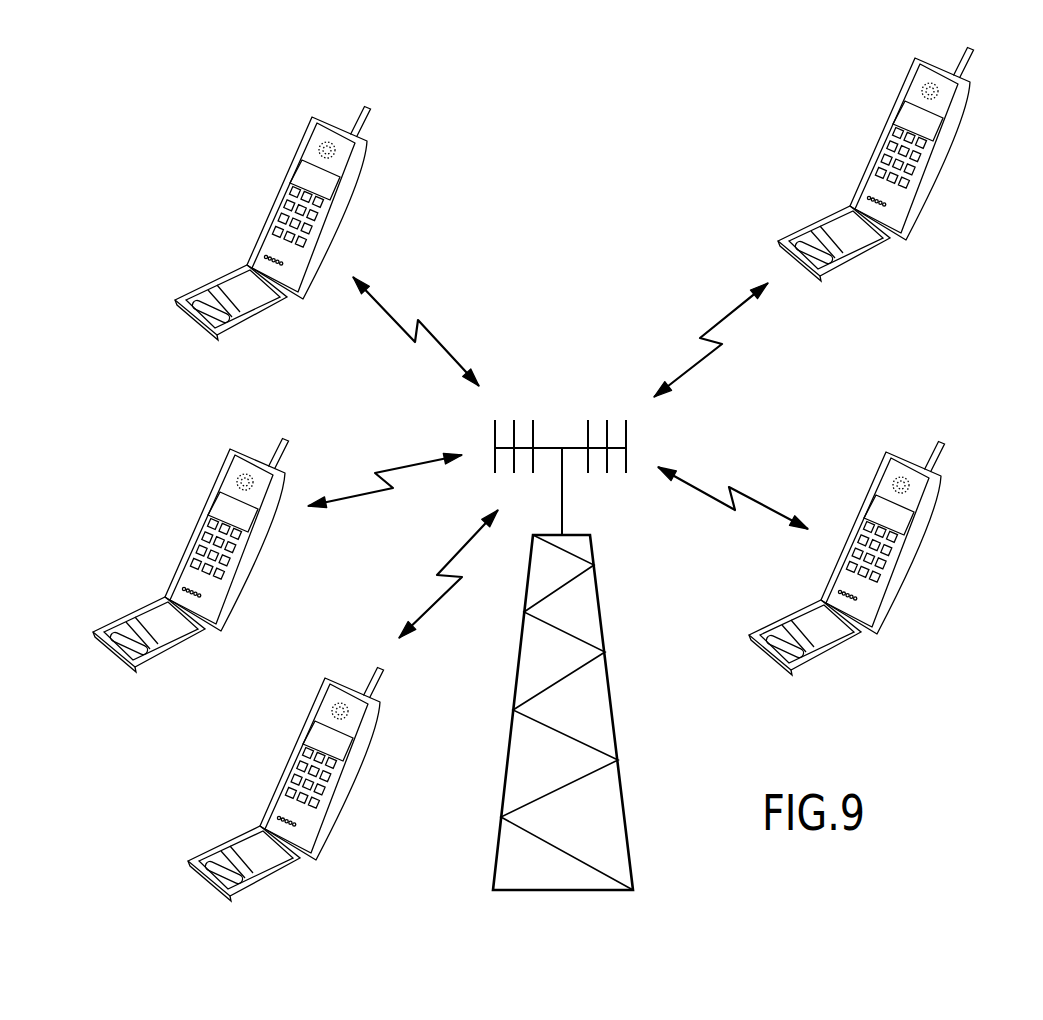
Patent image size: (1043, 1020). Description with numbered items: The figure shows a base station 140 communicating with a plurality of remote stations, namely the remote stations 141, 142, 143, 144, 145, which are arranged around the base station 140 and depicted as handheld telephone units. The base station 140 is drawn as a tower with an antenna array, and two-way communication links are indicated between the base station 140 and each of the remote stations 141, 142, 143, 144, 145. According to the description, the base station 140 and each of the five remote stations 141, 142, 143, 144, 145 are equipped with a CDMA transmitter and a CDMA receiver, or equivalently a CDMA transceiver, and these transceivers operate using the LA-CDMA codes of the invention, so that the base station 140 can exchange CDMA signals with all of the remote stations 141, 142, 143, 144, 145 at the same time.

The base station 140 is at (600, 588).
The remote station 141 is at (937, 163).
The remote station 142 is at (912, 560).
The remote station 143 is at (183, 562).
The remote station 144 is at (270, 238).
The remote station 145 is at (280, 805).